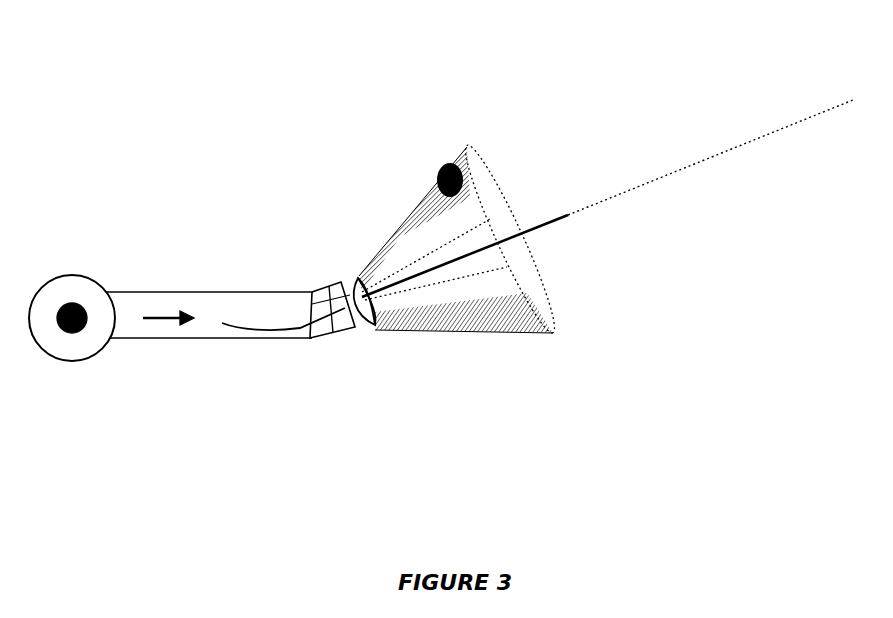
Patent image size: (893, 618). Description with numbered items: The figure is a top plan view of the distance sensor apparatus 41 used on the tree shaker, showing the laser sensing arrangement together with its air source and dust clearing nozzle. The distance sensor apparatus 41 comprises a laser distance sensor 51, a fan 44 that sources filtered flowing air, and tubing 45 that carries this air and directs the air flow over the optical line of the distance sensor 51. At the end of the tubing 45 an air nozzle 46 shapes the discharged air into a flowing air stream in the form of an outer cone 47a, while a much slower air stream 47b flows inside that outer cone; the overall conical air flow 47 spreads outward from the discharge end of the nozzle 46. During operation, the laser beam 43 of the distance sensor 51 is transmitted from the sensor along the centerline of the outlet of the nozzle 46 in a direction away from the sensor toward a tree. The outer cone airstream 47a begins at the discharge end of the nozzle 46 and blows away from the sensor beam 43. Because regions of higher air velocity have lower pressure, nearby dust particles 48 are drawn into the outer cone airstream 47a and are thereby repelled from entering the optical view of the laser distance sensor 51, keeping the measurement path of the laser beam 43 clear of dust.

The distance sensor apparatus 41 is at (280, 130).
The laser beam 43 is at (720, 155).
The fan 44 is at (77, 293).
The tubing 45 is at (225, 298).
The air nozzle 46 is at (372, 326).
The irradiation light beam 47 is at (463, 333).
The outer cone airstream 47a is at (403, 210).
The slower air stream 47b is at (439, 172).
The dust particles 48 is at (527, 333).
The laser distance sensor 51 is at (300, 330).